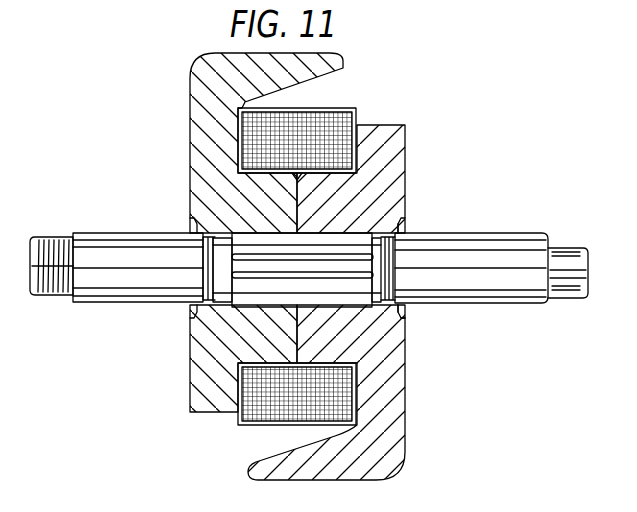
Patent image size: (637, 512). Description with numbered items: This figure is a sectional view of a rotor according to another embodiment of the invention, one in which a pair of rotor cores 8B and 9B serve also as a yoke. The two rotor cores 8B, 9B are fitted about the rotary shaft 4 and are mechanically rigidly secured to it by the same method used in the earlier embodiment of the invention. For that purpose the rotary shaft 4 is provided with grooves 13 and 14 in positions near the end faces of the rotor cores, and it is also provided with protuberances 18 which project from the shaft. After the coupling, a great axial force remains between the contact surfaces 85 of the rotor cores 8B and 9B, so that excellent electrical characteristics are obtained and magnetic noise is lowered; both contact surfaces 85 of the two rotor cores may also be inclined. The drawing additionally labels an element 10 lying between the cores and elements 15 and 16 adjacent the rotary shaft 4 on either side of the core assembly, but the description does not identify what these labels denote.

The rotary shaft 4 is at (480, 255).
The rotor core 8B is at (203, 198).
The rotor core 9B is at (392, 158).
The coil 10 is at (337, 108).
The groove 13 is at (207, 303).
The groove 14 is at (383, 301).
The collar 15 is at (197, 287).
The collar 16 is at (413, 289).
The protuberance 18 is at (393, 325).
The contact surface 85 is at (297, 355).